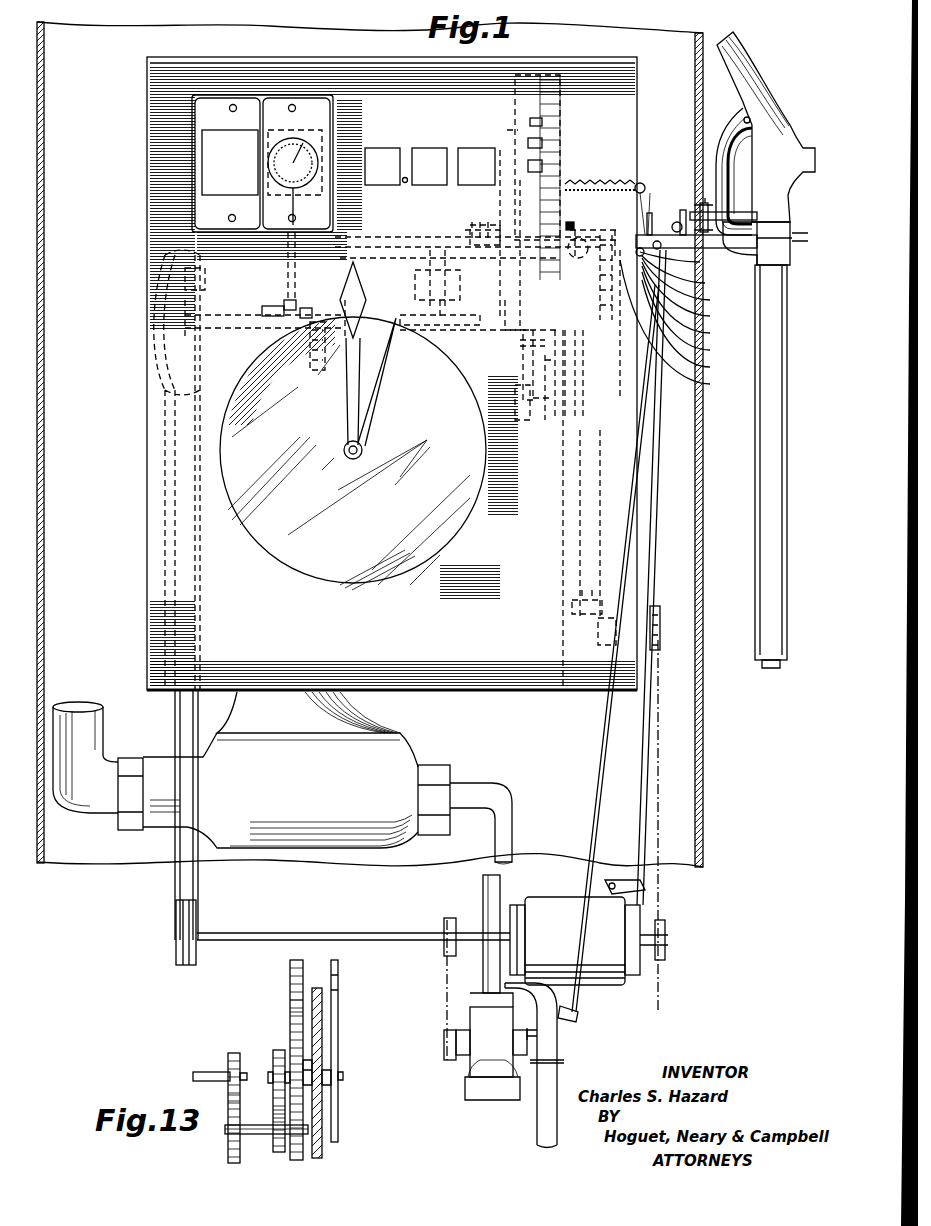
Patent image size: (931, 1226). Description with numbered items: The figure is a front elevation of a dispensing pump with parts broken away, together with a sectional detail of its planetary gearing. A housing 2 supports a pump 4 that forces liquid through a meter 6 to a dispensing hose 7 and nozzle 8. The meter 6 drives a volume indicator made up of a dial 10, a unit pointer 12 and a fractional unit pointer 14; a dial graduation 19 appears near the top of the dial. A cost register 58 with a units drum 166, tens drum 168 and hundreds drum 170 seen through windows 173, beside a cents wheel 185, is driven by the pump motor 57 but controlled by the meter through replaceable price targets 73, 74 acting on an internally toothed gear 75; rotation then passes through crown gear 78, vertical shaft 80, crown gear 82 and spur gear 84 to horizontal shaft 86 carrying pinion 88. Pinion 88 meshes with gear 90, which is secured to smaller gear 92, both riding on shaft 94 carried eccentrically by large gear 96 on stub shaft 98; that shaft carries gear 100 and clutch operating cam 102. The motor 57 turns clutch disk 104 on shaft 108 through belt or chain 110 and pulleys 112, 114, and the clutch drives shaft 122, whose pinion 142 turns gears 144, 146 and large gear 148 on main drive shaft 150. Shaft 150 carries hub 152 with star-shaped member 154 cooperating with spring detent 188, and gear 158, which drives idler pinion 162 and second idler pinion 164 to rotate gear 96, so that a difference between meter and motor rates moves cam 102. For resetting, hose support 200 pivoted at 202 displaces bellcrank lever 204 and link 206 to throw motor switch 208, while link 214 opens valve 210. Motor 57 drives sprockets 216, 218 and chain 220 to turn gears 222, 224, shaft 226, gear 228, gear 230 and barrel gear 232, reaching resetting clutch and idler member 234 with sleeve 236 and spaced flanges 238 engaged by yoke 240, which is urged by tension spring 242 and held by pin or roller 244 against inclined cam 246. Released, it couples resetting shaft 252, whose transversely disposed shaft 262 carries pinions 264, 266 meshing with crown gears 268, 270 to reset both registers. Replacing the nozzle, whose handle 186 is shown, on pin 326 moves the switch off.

In FIG. 1, the housing 2 is at (264, 48).
In FIG. 1, the pump 4 is at (510, 1011).
In FIG. 1, the meter 6 is at (375, 768).
In FIG. 1, the dispensing hose 7 is at (782, 310).
In FIG. 1, the nozzle 8 is at (745, 66).
In FIG. 1, the dial 10 is at (300, 580).
In FIG. 1, the unit pointer 12 is at (372, 420).
In FIG. 1, the fractional unit pointer 14 is at (348, 415).
In FIG. 1, the stop 19 is at (306, 308).
In FIG. 1, the pump motor 57 is at (575, 941).
In FIG. 1, the cost register 58 is at (332, 45).
In FIG. 1, the replaceable price target 73 is at (316, 105).
In FIG. 1, the replaceable price target 74 is at (200, 160).
In FIG. 1, the internally toothed gear 75 is at (322, 155).
In FIG. 1, the crown gear 78 is at (312, 178).
In FIG. 1, the vertical shaft 80 is at (286, 248).
In FIG. 1, the crown gear 82 is at (268, 306).
In FIG. 1, the spur gear 84 is at (312, 365).
In FIG. 1, the horizontal shaft 86 is at (522, 345).
In FIG. 13, the horizontal shaft 86 is at (224, 1072).
In FIG. 1, the pinion 88 is at (523, 370).
In FIG. 13, the pinion 88 is at (234, 1056).
In FIG. 1, the gear 90 is at (533, 405).
In FIG. 13, the gear 90 is at (228, 1104).
In FIG. 1, the smaller gear 92 is at (548, 418).
In FIG. 13, the smaller gear 92 is at (274, 1116).
In FIG. 1, the shaft 94 is at (522, 400).
In FIG. 13, the shaft 94 is at (226, 1134).
In FIG. 1, the large gear 96 is at (565, 405).
In FIG. 13, the large gear 96 is at (294, 1006).
In FIG. 1, the stub shaft 98 is at (583, 378).
In FIG. 13, the stub shaft 98 is at (340, 1080).
In FIG. 1, the gear 100 is at (535, 330).
In FIG. 13, the gear 100 is at (280, 1052).
In FIG. 1, the clutch operating cam 102 is at (576, 390).
In FIG. 13, the clutch operating cam 102 is at (334, 1038).
In FIG. 1, the clutch disk 104 is at (330, 372).
In FIG. 1, the shaft 108 is at (210, 322).
In FIG. 1, the belt or chain 110 is at (170, 518).
In FIG. 1, the pulley 112 is at (180, 270).
In FIG. 1, the pulley 114 is at (176, 942).
In FIG. 1, the shaft 122 is at (465, 318).
In FIG. 1, the pinion 142 is at (575, 300).
In FIG. 1, the gear 144 is at (576, 232).
In FIG. 1, the gear 146 is at (560, 200).
In FIG. 1, the large gear 148 is at (580, 196).
In FIG. 1, the main drive shaft 150 is at (500, 155).
In FIG. 1, the hub 152 is at (528, 120).
In FIG. 1, the star-shaped member 154 is at (548, 170).
In FIG. 1, the gear 158 is at (545, 145).
In FIG. 1, the idler pinion 162 is at (575, 222).
In FIG. 13, the second idler pinion 164 is at (290, 970).
In FIG. 1, the units drum 166 is at (480, 148).
In FIG. 1, the tens drum 168 is at (432, 160).
In FIG. 1, the hundreds drum 170 is at (385, 160).
In FIG. 1, the windows 173 is at (395, 192).
In FIG. 1, the cents wheel 185 is at (466, 150).
In FIG. 1, the nozzle handle 186 is at (738, 150).
In FIG. 1, the spring detent 188 is at (545, 120).
In FIG. 1, the hose support 200 is at (700, 262).
In FIG. 1, the pivot 202 is at (588, 248).
In FIG. 1, the bellcrank lever 204 is at (705, 283).
In FIG. 1, the link 206 is at (660, 483).
In FIG. 1, the motor switch 208 is at (648, 886).
In FIG. 1, the valve 210 is at (566, 1020).
In FIG. 1, the link 214 is at (655, 748).
In FIG. 1, the sprocket 216 is at (668, 940).
In FIG. 1, the sprocket 218 is at (661, 625).
In FIG. 1, the chain 220 is at (660, 712).
In FIG. 1, the gear 222 is at (610, 615).
In FIG. 1, the gear 224 is at (604, 604).
In FIG. 1, the shaft 226 is at (592, 480).
In FIG. 1, the gear 228 is at (710, 384).
In FIG. 1, the gear 230 is at (710, 367).
In FIG. 1, the barrel gear 232 is at (710, 350).
In FIG. 1, the resetting clutch and idler member 234 is at (655, 222).
In FIG. 1, the sleeve 236 is at (660, 225).
In FIG. 1, the spaced flanges 238 is at (710, 333).
In FIG. 1, the yoke 240 is at (642, 205).
In FIG. 1, the tension spring 242 is at (575, 190).
In FIG. 1, the pin or roller 244 is at (710, 300).
In FIG. 1, the inclined cam 246 is at (710, 316).
In FIG. 1, the resetting shaft 252 is at (388, 240).
In FIG. 1, the transversely disposed shaft 262 is at (460, 245).
In FIG. 1, the pinion 264 is at (468, 292).
In FIG. 1, the pinion 266 is at (485, 225).
In FIG. 1, the crown gear 268 is at (552, 195).
In FIG. 1, the crown gear 270 is at (468, 228).
In FIG. 1, the pin 326 is at (705, 210).